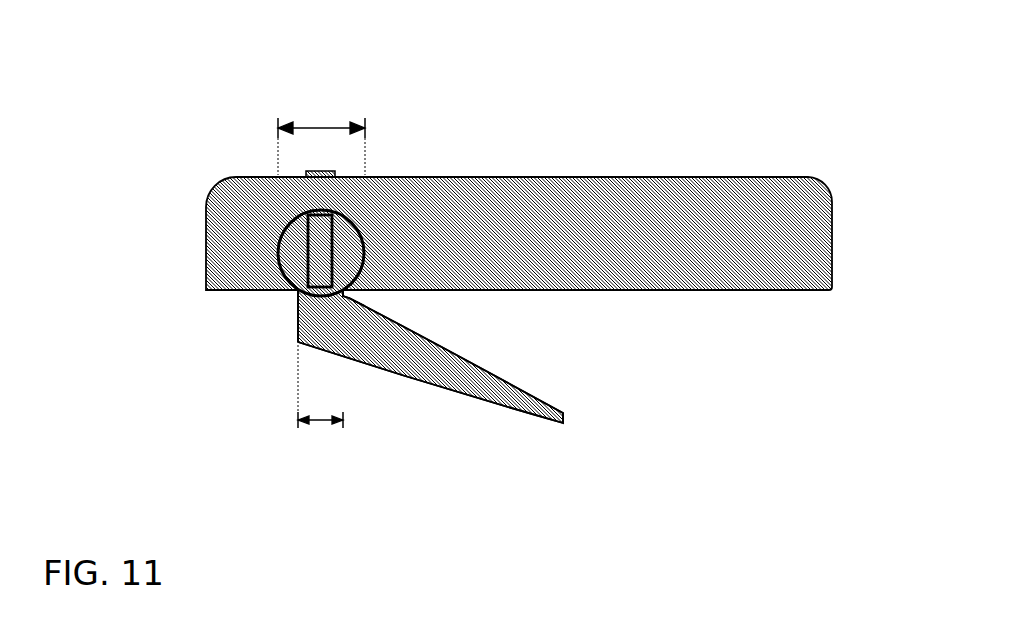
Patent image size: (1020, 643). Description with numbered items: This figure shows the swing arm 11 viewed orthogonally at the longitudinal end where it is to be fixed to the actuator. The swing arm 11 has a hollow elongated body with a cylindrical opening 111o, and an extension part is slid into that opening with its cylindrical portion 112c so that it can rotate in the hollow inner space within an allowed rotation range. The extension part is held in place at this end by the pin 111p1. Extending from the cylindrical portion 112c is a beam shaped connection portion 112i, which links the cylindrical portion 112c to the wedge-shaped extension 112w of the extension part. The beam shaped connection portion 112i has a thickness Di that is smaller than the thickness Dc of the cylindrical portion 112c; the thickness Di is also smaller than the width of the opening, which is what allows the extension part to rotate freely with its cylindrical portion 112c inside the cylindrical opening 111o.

The swing arm 11 is at (618, 227).
The cylindrical opening 111o is at (433, 263).
The pin 111p1 is at (272, 225).
The beam shaped connection portion 112i is at (347, 302).
The wedge-shaped extension 112w is at (480, 380).
The cylindrical portion 112c is at (268, 290).
The thickness of cylindrical portion Dc is at (321, 126).
The thickness of beam shaped connection portion Di is at (320, 410).